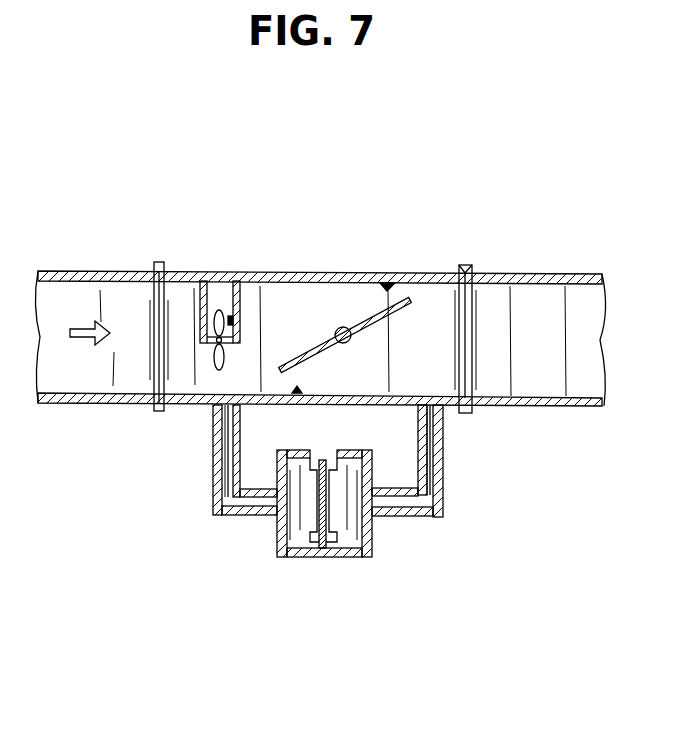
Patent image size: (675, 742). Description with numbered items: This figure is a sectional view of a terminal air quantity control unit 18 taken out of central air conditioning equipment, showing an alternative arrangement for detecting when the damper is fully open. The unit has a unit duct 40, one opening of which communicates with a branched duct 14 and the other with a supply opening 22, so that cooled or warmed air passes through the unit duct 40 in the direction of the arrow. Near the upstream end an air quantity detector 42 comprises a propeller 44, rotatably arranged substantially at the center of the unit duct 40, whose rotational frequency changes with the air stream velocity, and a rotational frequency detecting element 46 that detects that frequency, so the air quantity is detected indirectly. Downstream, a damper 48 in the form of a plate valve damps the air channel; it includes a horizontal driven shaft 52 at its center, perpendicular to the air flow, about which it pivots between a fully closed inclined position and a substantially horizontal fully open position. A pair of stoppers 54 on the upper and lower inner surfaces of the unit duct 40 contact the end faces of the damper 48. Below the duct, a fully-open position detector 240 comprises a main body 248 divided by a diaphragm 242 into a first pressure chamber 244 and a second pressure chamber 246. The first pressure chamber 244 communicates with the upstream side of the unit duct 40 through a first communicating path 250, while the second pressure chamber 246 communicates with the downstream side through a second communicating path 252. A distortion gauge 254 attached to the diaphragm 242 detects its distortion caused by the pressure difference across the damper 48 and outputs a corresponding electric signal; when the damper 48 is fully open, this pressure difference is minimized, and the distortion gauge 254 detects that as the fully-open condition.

The branched duct 14 is at (88, 275).
The first terminal air quantity control unit 18 is at (320, 306).
The supply opening 22 is at (535, 276).
The unit duct 40 is at (350, 279).
The air quantity detector 42 is at (196, 316).
The propeller 44 is at (221, 310).
The rotational frequency detecting element 46 is at (231, 316).
The damper 48 is at (387, 316).
The driven shaft 52 is at (347, 340).
The stoppers 54 is at (390, 282).
The fully-open position detector 240 is at (327, 535).
The diaphragm 242 is at (318, 522).
The first pressure chamber 244 is at (293, 517).
The second pressure chamber 246 is at (357, 528).
The main body 248 is at (327, 552).
The first communicating path 250 is at (216, 455).
The second communicating path 252 is at (432, 454).
The distortion gauge 254 is at (333, 517).